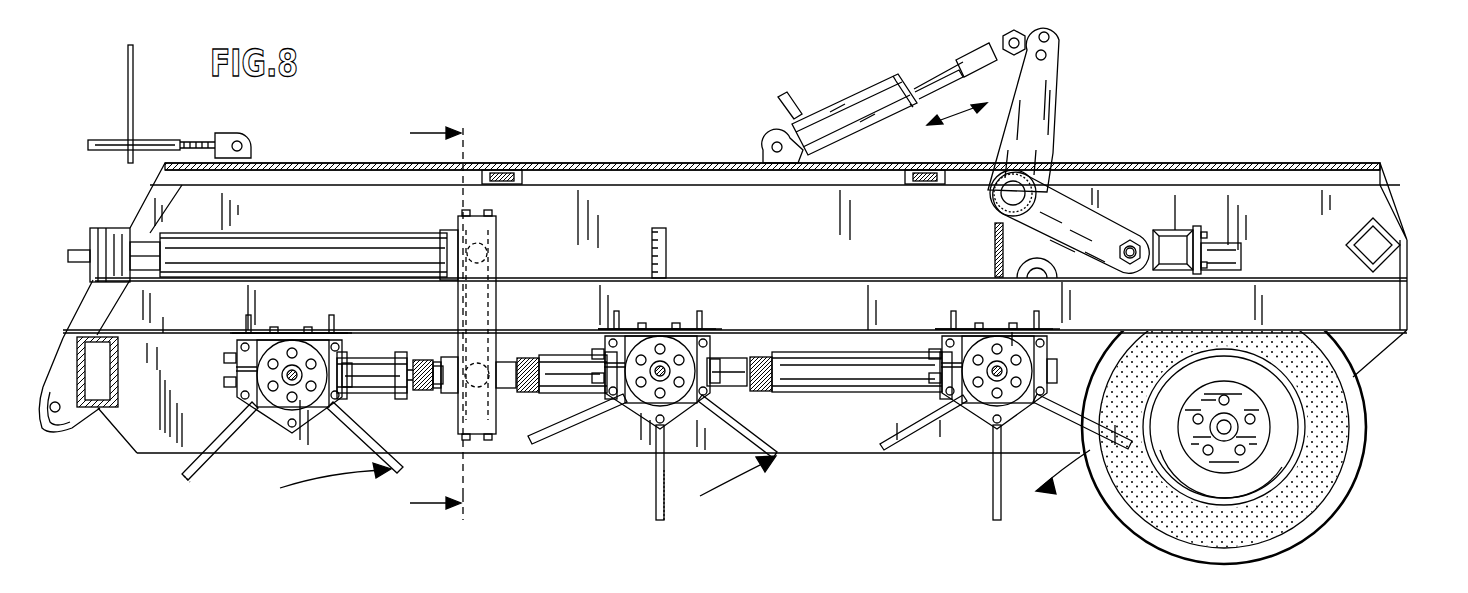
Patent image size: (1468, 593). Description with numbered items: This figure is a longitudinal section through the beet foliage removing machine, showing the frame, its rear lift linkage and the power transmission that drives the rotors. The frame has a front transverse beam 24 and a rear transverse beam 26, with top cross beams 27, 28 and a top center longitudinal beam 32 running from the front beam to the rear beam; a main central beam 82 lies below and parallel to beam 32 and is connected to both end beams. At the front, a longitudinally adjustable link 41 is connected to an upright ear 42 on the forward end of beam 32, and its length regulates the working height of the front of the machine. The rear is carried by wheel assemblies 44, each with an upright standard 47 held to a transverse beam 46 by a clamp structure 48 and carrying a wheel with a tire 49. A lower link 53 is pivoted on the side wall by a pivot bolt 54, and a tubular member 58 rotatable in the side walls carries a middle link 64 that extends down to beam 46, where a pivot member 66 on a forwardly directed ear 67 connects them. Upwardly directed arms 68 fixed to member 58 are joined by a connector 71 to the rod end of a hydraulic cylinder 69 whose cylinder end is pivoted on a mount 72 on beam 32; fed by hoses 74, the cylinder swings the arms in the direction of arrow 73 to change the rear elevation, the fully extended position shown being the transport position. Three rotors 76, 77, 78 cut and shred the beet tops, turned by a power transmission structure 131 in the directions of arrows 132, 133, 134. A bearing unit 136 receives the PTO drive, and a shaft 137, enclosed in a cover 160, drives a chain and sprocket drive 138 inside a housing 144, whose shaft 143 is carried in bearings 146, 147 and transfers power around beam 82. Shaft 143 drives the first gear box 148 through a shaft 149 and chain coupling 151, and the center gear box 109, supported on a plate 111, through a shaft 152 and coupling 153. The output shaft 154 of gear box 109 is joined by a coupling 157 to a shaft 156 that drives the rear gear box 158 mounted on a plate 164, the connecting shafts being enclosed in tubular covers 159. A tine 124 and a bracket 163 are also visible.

The front transverse beam 24 is at (95, 416).
The rear transverse beam 26 is at (1400, 240).
The top cross beam 27 is at (540, 166).
The top cross beam 28 is at (926, 186).
The top center longitudinal beam 32 is at (660, 176).
The longitudinally adjustable link 41 is at (150, 146).
The upright ear 42 is at (248, 140).
The wheel assembly 44 is at (1362, 456).
The transverse member or beam 46 is at (1173, 242).
The upright standard 47 is at (1246, 258).
The clamp structure 48 is at (1205, 232).
The tire 49 is at (1362, 398).
The lower link 53 is at (1078, 286).
The pivot bolt 54 is at (1037, 280).
The shaft or tubular member 58 is at (990, 198).
The middle link 64 is at (1082, 219).
The pivot member 66 is at (1133, 266).
The forwardly directed ear 67 is at (1140, 238).
The upwardly directed arm 68 is at (1056, 98).
The hydraulic cylinder 69 is at (906, 78).
The connector 71 is at (1012, 34).
The mount 72 is at (768, 135).
The arrow 73 is at (952, 120).
The lines or hoses 74 is at (800, 100).
The first foliage removing drum or rotor 76 is at (232, 480).
The second foliage removing drum or rotor 77 is at (810, 460).
The third foliage removing drum or rotor 78 is at (972, 470).
The main central beam 82 is at (834, 292).
The center gear box 109 is at (690, 396).
The plate 111 is at (712, 330).
The tine 124 is at (656, 497).
The power transmission structure 131 is at (428, 220).
The arrow 132 is at (300, 488).
The arrow 133 is at (730, 482).
The arrow 134 is at (1050, 490).
The bearing unit 136 is at (108, 228).
The shaft 137 is at (262, 248).
The speed reducer or chain and sprocket drive 138 is at (498, 272).
The shaft 143 is at (440, 396).
The housing 144 is at (496, 229).
The bearing 146 is at (515, 345).
The bearing 147 is at (447, 358).
The front or first gear box 148 is at (256, 386).
The shaft 149 is at (390, 393).
The chain coupling 151 is at (420, 358).
The shaft 152 is at (565, 376).
The coupling 153 is at (540, 360).
The output shaft 154 is at (738, 370).
The shaft 156 is at (872, 372).
The coupling 157 is at (769, 393).
The third or rear gear box 158 is at (992, 396).
The elongated linear tubular cover 159 is at (378, 356).
The cover 160 is at (302, 238).
The mounting bracket 163 is at (282, 333).
The plate 164 is at (986, 330).